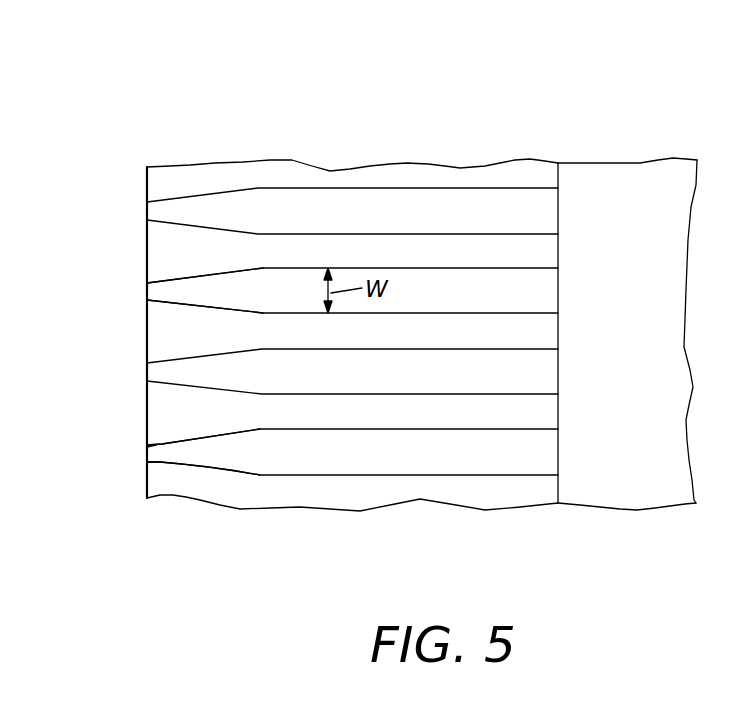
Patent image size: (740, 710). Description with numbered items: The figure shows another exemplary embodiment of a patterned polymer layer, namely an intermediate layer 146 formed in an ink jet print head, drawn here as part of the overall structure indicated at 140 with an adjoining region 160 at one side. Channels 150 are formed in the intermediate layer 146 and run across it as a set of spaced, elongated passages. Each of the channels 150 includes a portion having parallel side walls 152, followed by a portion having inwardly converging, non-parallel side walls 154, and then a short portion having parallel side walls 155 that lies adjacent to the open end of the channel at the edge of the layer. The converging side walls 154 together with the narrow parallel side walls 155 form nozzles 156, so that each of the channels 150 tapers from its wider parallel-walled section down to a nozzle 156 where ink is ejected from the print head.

The optical device 140 is at (569, 112).
The intermediate layer 146 is at (168, 181).
The channels 150 is at (448, 187).
The parallel side walls 152 is at (345, 429).
The inwardly converging, non-parallel side walls 154 is at (197, 439).
The parallel side walls 155 is at (150, 448).
The nozzles 156 is at (158, 294).
The end block 160 is at (652, 173).